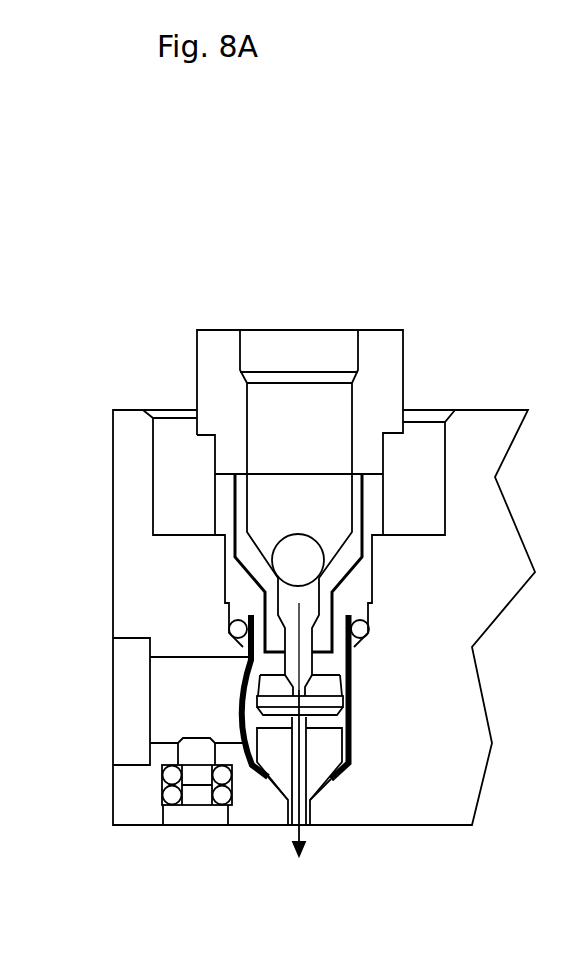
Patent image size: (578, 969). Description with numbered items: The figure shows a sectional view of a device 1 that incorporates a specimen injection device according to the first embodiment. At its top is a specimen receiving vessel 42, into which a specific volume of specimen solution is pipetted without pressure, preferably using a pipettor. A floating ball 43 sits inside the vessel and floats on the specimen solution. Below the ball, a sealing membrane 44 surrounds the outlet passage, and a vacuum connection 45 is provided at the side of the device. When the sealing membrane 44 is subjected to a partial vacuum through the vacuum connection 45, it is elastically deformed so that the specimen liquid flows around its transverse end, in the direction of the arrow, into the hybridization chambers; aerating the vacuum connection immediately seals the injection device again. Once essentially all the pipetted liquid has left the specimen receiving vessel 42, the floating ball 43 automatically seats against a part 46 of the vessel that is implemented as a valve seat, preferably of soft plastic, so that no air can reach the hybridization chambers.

The device 1 is at (441, 645).
The specimen receiving vessel 42 is at (219, 360).
The floating ball 43 is at (292, 547).
The sealing membrane 44 is at (245, 723).
The vacuum connection 45 is at (193, 787).
The part of specimen receiving vessel 46 is at (258, 570).